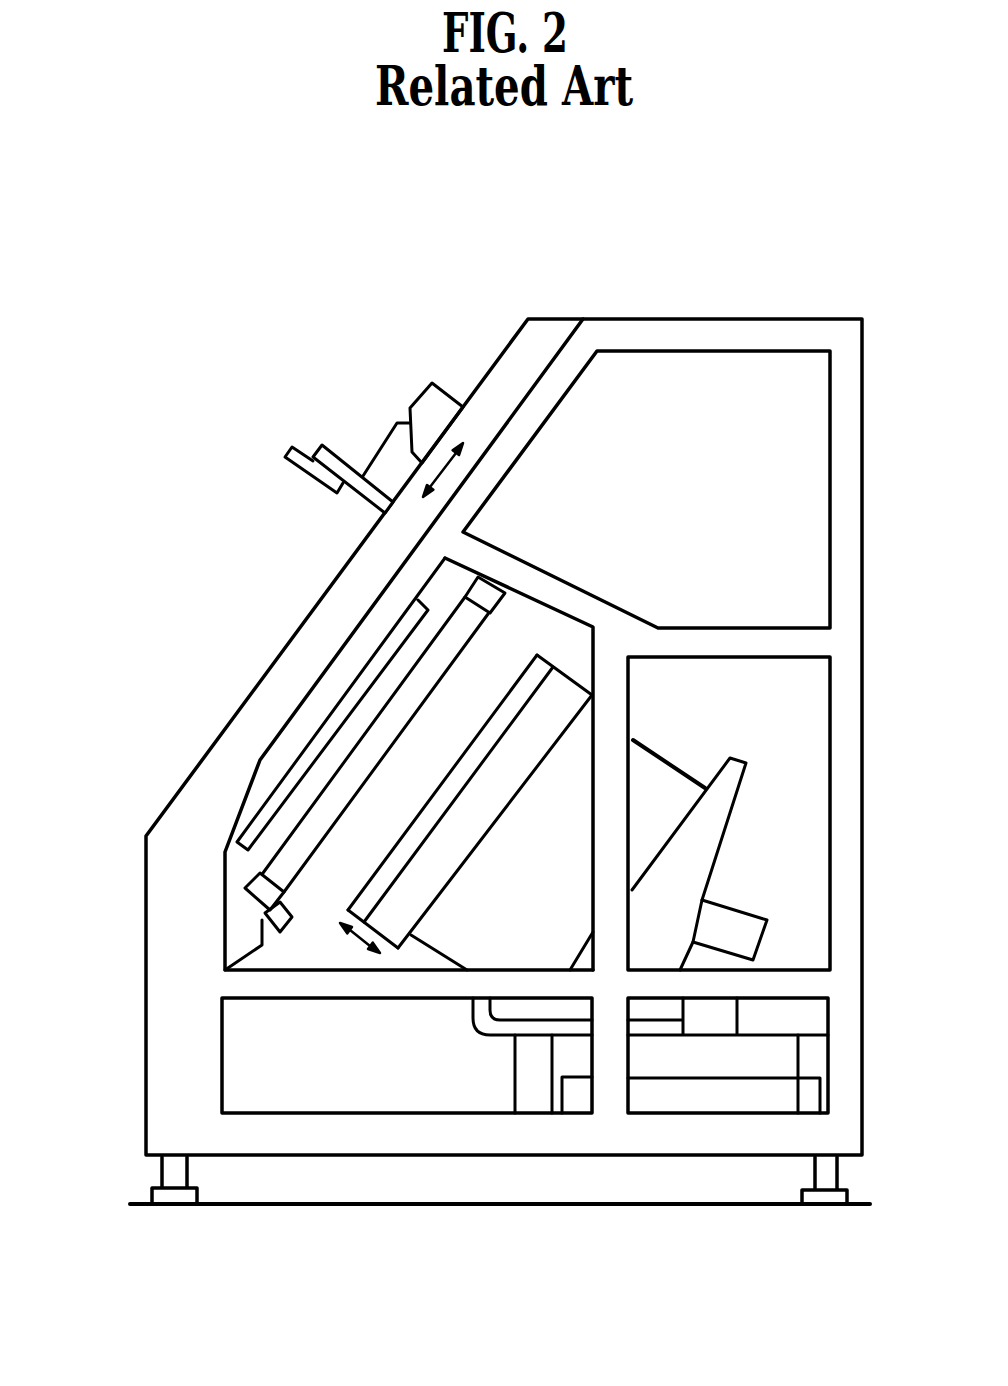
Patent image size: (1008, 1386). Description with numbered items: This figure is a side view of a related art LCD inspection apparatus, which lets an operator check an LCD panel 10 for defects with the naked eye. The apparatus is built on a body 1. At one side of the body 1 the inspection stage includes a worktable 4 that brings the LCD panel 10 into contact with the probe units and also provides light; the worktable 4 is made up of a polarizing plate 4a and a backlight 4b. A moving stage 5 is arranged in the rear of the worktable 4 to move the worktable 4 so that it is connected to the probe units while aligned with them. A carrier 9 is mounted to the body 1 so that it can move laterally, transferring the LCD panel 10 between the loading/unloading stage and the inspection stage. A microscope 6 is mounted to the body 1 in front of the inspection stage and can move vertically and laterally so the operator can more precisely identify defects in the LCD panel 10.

The body 1 is at (725, 332).
The worktable 4 is at (415, 1009).
The polarizing plate 4a is at (378, 888).
The backlight 4b is at (427, 897).
The moving stage 5 is at (529, 932).
The microscope 6 is at (363, 430).
The carrier 9 is at (252, 895).
The LCD panel 10 is at (357, 767).